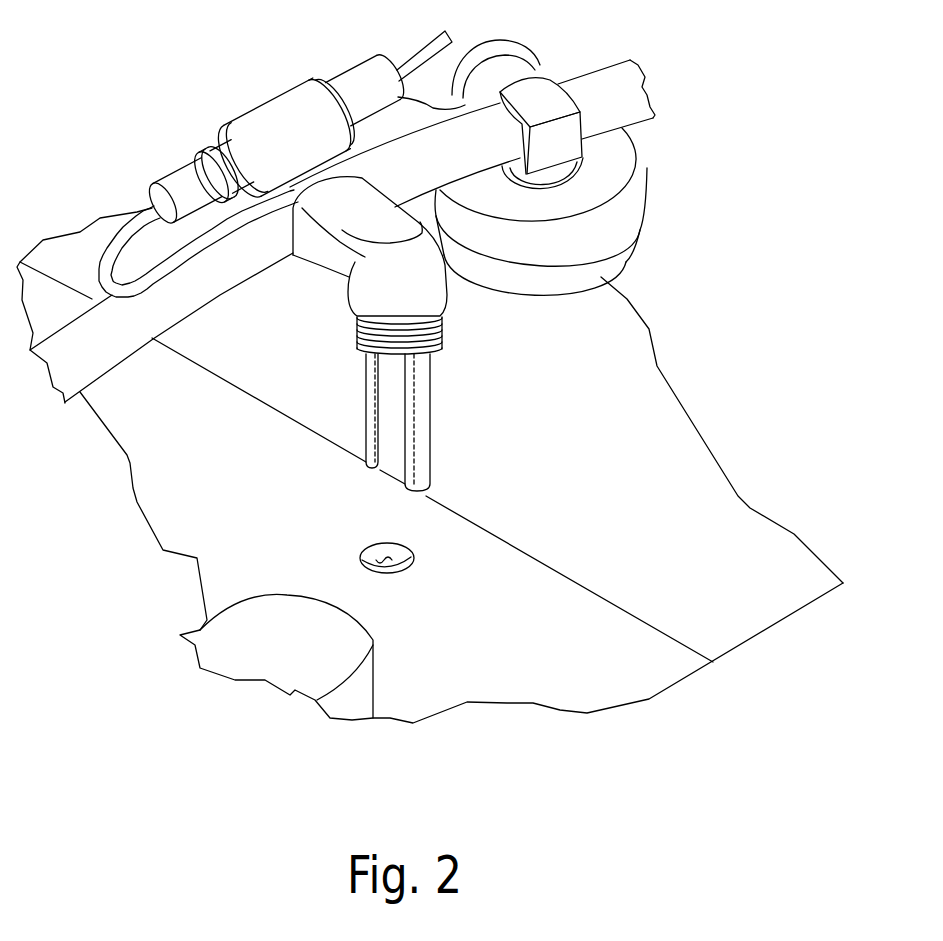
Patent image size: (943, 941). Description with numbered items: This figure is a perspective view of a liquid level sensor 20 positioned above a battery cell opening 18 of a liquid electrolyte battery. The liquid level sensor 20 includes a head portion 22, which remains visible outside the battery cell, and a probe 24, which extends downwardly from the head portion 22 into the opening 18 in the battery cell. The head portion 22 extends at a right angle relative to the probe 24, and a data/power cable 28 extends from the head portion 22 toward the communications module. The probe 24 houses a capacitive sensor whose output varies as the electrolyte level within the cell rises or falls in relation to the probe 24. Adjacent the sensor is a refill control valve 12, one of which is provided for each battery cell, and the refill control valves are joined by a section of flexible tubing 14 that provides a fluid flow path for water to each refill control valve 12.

The refill control valve 12 is at (633, 207).
The flexible tubing 14 is at (602, 90).
The opening 18 is at (383, 556).
The liquid level sensor 20 is at (425, 334).
The head portion 22 is at (332, 262).
The probe 24 is at (445, 313).
The data/power cable 28 is at (155, 284).